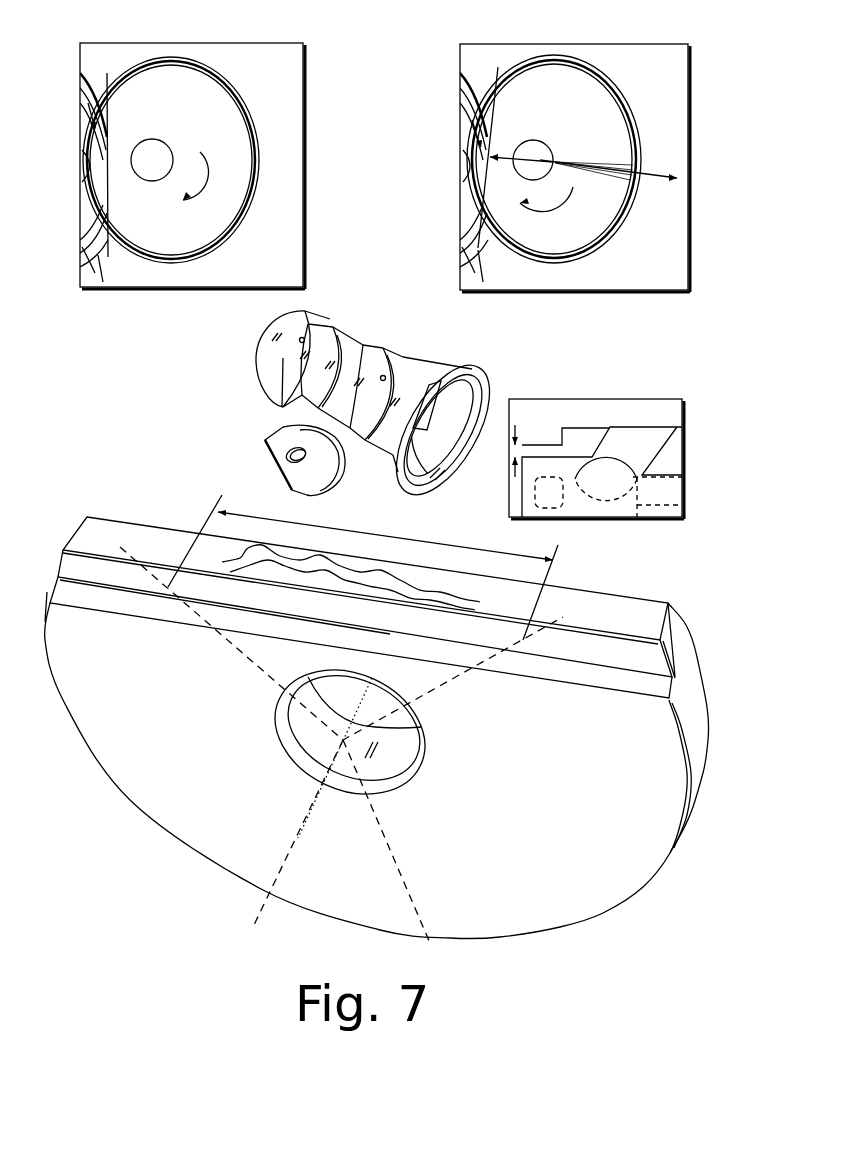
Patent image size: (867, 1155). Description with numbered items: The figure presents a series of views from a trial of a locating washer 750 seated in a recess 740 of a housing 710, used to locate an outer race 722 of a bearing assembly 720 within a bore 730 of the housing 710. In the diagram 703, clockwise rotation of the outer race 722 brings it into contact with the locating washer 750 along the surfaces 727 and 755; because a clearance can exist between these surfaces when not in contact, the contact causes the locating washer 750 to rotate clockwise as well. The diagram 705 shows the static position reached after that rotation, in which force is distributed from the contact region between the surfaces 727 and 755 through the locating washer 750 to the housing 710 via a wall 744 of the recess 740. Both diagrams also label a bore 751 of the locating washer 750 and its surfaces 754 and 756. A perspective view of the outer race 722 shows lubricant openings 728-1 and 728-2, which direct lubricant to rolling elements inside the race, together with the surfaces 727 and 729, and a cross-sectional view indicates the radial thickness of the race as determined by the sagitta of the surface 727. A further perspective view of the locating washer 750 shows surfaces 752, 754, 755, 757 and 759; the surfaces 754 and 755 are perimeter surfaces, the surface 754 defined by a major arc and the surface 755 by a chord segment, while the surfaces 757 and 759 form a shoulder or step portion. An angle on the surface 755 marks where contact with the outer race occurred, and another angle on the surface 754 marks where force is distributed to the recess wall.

The diagram 703 is at (304, 56).
The diagram 705 is at (458, 62).
The housing 710 is at (289, 223).
The bearing assembly 720 is at (114, 268).
The bore 730 is at (114, 268).
The outer race 722 is at (109, 226).
The surface 727 is at (108, 192).
The lubricant opening 728-1 is at (383, 375).
The lubricant opening 728-2 is at (302, 337).
The surface 729 is at (423, 408).
The recess 740 is at (222, 78).
The wall 744 is at (248, 105).
The locating washer 750 is at (228, 250).
The bore 751 is at (156, 139).
The surface 752 is at (591, 815).
The surface 754 is at (245, 110).
The surface 755 is at (107, 100).
The surface 756 is at (207, 235).
The surface 757 is at (547, 675).
The surface 759 is at (607, 650).